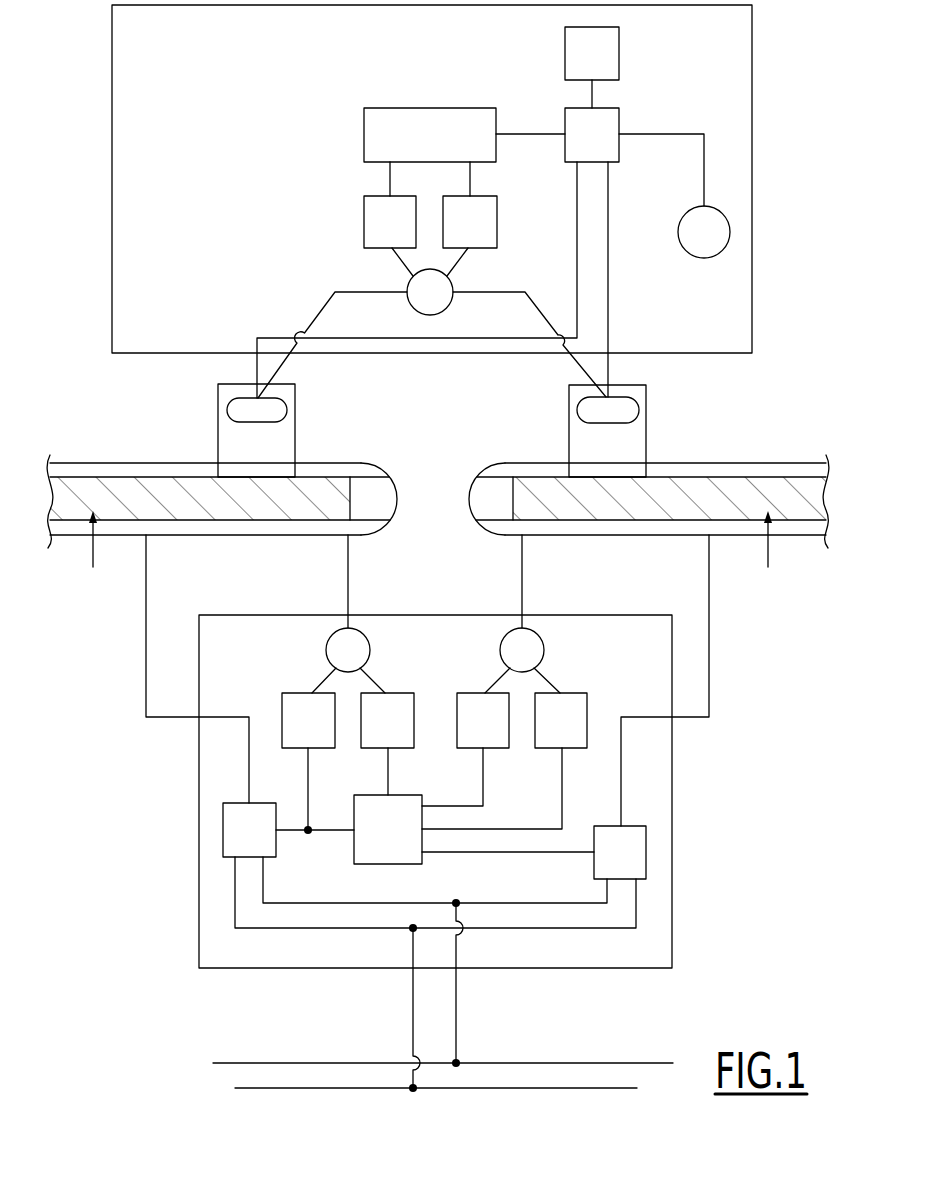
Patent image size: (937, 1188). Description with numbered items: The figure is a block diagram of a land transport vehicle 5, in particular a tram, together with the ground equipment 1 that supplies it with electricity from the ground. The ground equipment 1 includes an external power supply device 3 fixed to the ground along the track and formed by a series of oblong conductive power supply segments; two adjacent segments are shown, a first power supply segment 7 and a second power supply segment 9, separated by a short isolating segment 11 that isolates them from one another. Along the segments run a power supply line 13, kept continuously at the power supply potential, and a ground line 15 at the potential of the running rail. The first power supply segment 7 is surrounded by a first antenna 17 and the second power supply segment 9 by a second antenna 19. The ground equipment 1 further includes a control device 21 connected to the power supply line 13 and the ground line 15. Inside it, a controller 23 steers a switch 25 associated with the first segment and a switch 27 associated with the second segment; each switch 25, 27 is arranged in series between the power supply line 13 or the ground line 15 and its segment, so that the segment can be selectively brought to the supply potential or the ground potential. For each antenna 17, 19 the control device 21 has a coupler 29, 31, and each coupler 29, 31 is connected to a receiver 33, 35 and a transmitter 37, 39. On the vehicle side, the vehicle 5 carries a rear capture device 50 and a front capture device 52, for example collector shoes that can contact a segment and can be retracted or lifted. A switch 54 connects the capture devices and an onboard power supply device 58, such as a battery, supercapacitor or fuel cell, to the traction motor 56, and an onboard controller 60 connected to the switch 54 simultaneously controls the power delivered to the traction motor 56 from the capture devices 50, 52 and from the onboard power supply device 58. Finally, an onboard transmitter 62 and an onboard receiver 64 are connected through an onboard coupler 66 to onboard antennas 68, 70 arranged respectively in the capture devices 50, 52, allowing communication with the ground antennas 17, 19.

The ground equipment 1 is at (435, 751).
The external power supply device 3 is at (438, 540).
The land transport vehicle 5 is at (157, 58).
The first power supply segment 7 is at (93, 567).
The second power supply segment 9 is at (768, 565).
The isolating segment 11 is at (430, 492).
The power supply line 13 is at (335, 1063).
The ground line 15 is at (300, 1088).
The first antenna 17 is at (115, 537).
The second antenna 19 is at (740, 540).
The control device 21 is at (238, 669).
The controller 23 is at (376, 842).
The switch 25 is at (237, 842).
The switch 27 is at (608, 864).
The coupler 29 is at (356, 638).
The coupler 31 is at (535, 642).
The receiver 33 is at (296, 734).
The receiver 35 is at (471, 734).
The transmitter 37 is at (376, 734).
The transmitter 39 is at (549, 734).
The rear capture device 50 is at (218, 450).
The front capture device 52 is at (569, 452).
The switch 54 is at (580, 148).
The traction motor 56 is at (704, 258).
The onboard power supply device 58 is at (580, 68).
The onboard controller 60 is at (418, 148).
The onboard transmitter 62 is at (378, 236).
The onboard receiver 64 is at (458, 236).
The onboard coupler 66 is at (412, 279).
The onboard antenna 68 is at (227, 410).
The onboard antenna 70 is at (577, 412).